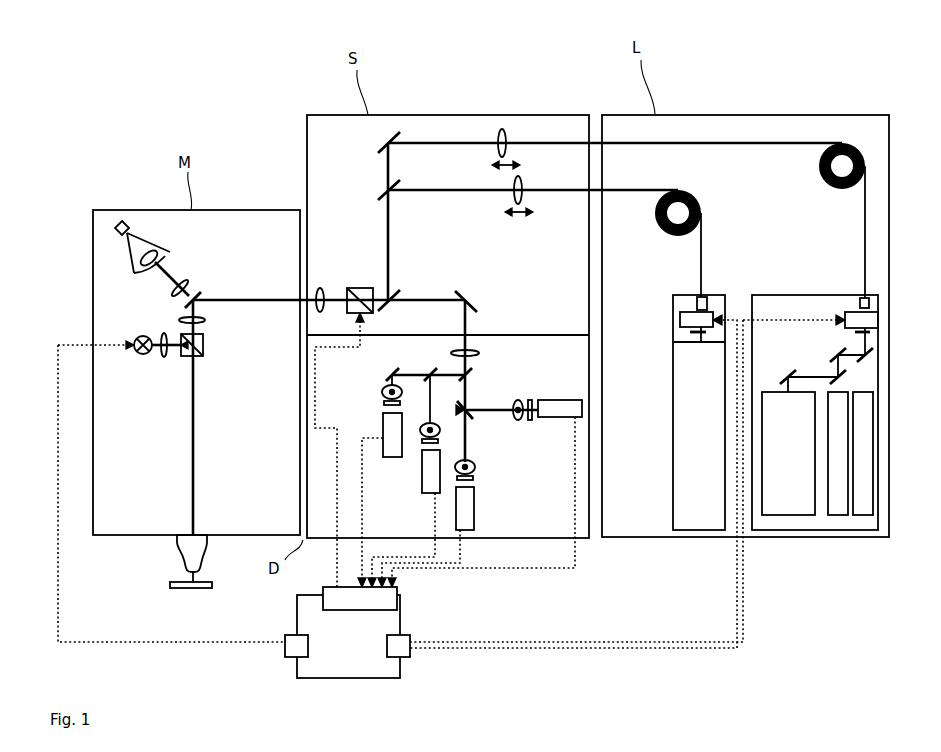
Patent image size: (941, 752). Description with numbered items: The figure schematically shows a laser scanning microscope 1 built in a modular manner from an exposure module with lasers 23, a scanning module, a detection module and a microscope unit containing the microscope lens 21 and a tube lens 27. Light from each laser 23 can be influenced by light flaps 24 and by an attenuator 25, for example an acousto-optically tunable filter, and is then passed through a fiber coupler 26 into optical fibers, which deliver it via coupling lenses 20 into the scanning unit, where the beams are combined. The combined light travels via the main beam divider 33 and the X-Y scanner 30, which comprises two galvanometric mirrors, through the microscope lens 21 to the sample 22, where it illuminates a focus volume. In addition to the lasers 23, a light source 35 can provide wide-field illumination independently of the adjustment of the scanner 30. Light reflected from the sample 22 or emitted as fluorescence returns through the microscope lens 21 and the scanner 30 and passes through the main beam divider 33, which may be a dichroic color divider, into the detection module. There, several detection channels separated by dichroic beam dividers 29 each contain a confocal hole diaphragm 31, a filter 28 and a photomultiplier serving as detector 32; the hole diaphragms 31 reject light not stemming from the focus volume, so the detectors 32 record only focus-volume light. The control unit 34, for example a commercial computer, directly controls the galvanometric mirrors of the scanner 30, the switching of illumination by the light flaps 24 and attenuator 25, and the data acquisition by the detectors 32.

The laser scanning microscope 1 is at (104, 61).
The coupling lens 20 is at (520, 175).
The microscope lens 21 is at (180, 548).
The sample 22 is at (180, 592).
The laser 23 is at (862, 402).
The light flap 24 is at (682, 328).
The attenuator 25 is at (680, 320).
The fiber coupler 26 is at (695, 300).
The tube lens 27 is at (180, 320).
The filter 28 is at (420, 440).
The dichroic beam divider 29 is at (436, 364).
The X-Y scanner 30 is at (360, 288).
The hole diaphragm 31 is at (425, 420).
The detector 32 is at (392, 458).
The main beam divider 33 is at (398, 295).
The control unit 34 is at (364, 647).
The light source 35 is at (134, 343).